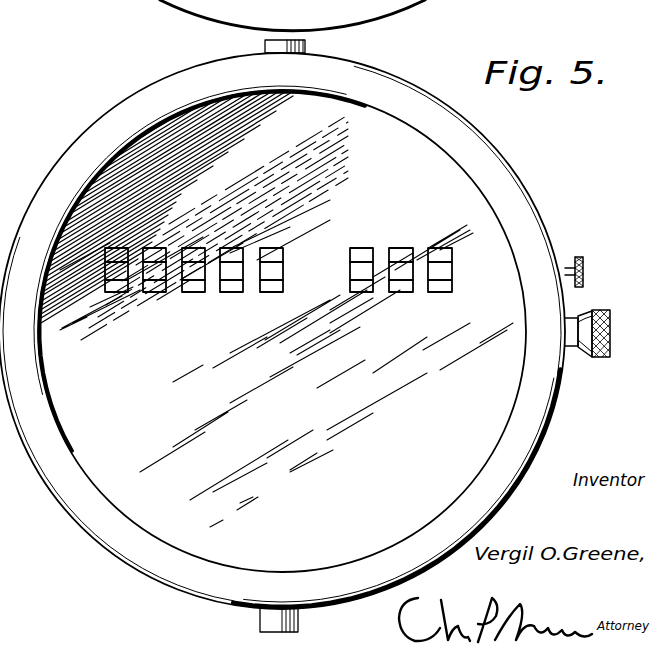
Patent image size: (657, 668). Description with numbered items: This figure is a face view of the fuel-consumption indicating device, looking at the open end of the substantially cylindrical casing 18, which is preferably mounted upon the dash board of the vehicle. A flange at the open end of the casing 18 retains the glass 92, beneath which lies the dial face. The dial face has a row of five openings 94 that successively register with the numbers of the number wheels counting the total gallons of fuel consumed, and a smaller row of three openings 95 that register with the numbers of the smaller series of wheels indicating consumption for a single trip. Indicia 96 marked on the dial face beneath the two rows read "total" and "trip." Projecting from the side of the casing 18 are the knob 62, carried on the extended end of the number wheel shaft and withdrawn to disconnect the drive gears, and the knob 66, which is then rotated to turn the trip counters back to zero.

The casing 18 is at (528, 190).
The knob 62 is at (583, 283).
The knob 66 is at (610, 330).
The glass 92 is at (280, 329).
The openings 94 is at (283, 257).
The openings 95 is at (373, 249).
The indicia 96 is at (210, 328).